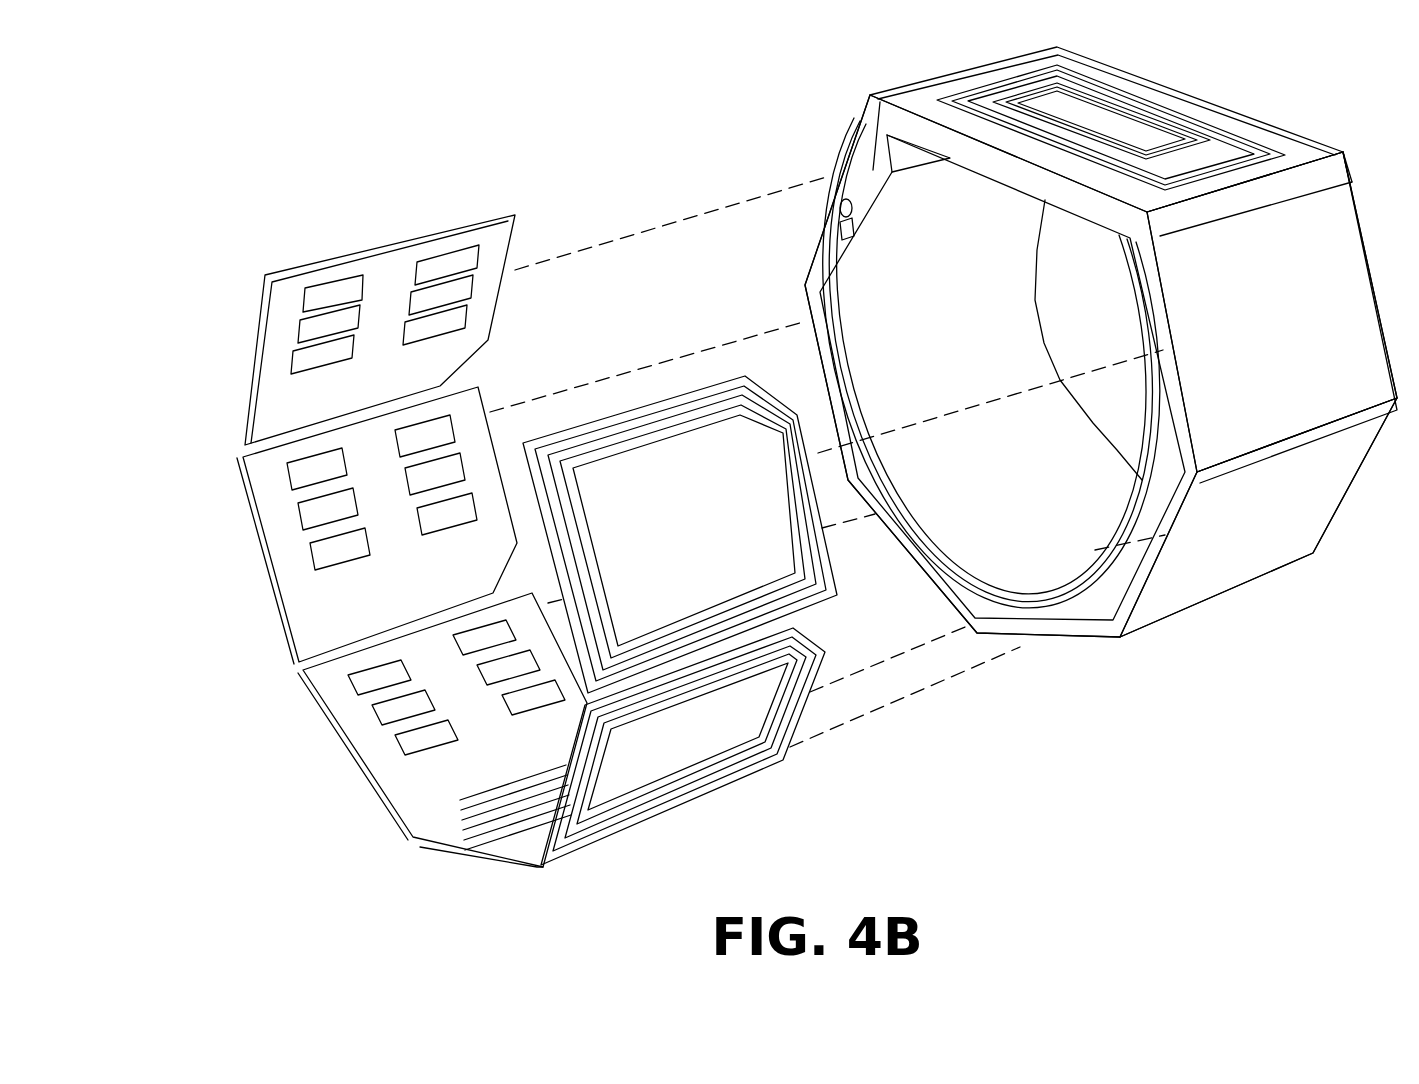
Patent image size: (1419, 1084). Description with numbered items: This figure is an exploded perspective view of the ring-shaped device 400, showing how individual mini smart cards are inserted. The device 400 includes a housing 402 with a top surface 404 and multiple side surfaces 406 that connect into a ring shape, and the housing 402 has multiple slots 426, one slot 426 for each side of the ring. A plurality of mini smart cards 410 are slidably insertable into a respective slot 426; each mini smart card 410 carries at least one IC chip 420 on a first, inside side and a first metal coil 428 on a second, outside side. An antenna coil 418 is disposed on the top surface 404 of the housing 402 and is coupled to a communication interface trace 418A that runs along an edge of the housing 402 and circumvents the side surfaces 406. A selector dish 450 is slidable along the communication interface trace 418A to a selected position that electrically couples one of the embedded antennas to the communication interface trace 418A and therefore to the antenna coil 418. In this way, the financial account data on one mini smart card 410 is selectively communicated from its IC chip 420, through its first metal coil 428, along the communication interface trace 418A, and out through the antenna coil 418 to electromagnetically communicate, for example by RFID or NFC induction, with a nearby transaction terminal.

The device 400 is at (178, 143).
The housing 402 is at (867, 98).
The top surface 404 is at (1345, 155).
The side surfaces 406 is at (1231, 310).
The mini smart card 410 is at (240, 382).
The antenna coil 418 is at (1197, 143).
The communication interface trace 418A is at (847, 252).
The IC chip 420 is at (383, 290).
The slot 426 is at (847, 163).
The first metal coil 428 is at (600, 420).
The selector dish 450 is at (847, 217).